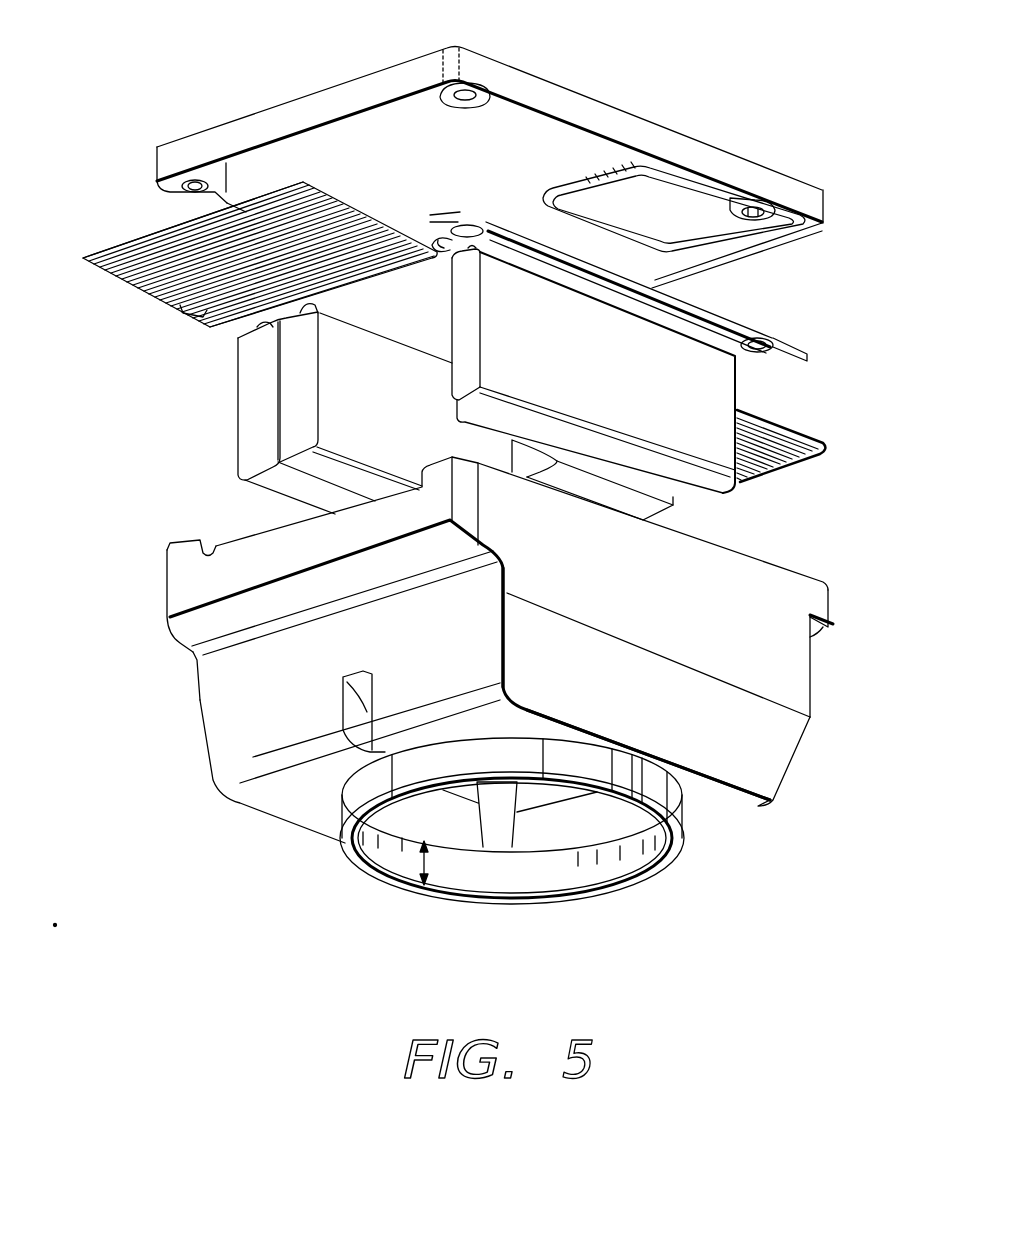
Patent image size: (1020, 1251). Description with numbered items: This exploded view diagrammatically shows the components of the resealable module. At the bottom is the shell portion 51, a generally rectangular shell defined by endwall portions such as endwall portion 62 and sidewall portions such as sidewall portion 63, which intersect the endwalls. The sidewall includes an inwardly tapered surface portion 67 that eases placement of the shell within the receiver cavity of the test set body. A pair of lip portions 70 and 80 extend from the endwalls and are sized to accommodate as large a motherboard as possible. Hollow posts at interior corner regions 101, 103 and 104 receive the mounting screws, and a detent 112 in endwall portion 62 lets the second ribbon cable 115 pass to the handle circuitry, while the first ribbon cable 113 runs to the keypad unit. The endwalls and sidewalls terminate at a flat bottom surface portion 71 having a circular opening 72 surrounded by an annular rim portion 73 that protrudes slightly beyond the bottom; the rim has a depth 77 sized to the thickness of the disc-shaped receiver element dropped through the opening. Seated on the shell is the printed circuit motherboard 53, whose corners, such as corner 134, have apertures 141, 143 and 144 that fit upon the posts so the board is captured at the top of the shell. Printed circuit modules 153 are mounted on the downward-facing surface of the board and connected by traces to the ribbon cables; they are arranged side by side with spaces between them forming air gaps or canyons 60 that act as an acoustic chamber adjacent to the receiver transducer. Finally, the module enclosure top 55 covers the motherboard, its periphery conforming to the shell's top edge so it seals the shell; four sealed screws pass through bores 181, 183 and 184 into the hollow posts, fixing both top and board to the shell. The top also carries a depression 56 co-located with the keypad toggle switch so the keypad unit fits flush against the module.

The shell portion 51 is at (812, 718).
The printed circuit motherboard 53 is at (822, 352).
The module enclosure top 55 is at (817, 203).
The depression 56 is at (665, 193).
The air gaps or canyons 60 is at (399, 410).
The endwall portion 62 is at (213, 703).
The sidewall portion 63 is at (800, 670).
The inwardly tapered surface portion 67 is at (763, 763).
The lip portion 70 is at (833, 609).
The bottom surface portion 71 is at (520, 723).
The circular opening 72 is at (580, 823).
The annular rim portion 73 is at (510, 905).
The depth 77 is at (432, 868).
The lip portion 80 is at (180, 580).
The interior corner region 101 is at (777, 588).
The interior corner region 103 is at (203, 662).
The interior corner region 104 is at (517, 540).
The detent 112 is at (240, 543).
The first ribbon cable 113 is at (795, 426).
The second ribbon cable 115 is at (130, 290).
The corner 134 is at (487, 230).
The aperture 141 is at (760, 339).
The aperture 143 is at (200, 323).
The aperture 144 is at (470, 220).
The printed circuit modules 153 is at (247, 393).
The bore 181 is at (772, 208).
The bore 183 is at (232, 171).
The bore 184 is at (488, 92).